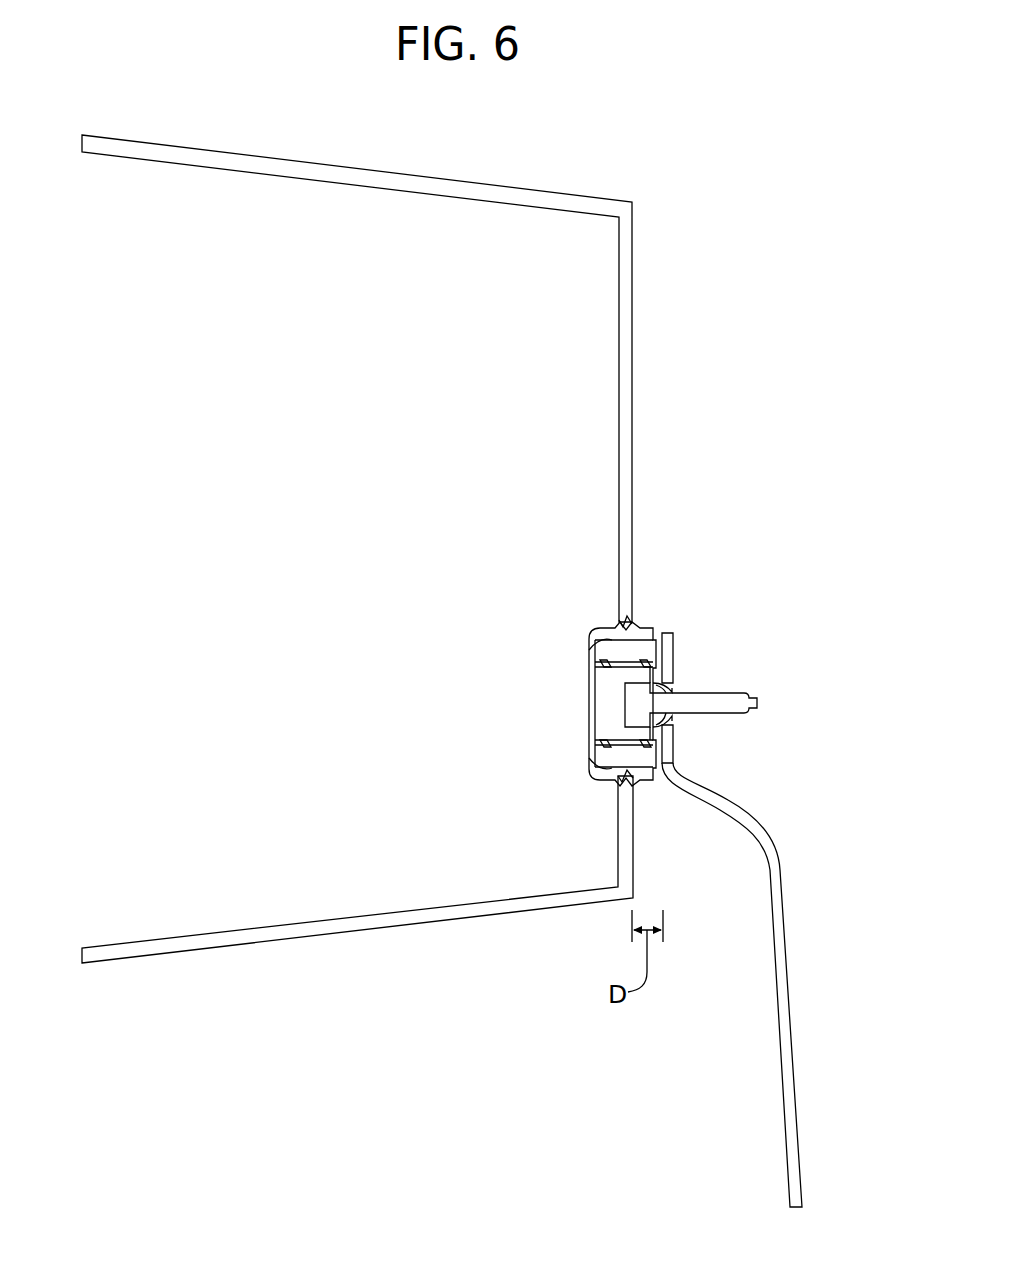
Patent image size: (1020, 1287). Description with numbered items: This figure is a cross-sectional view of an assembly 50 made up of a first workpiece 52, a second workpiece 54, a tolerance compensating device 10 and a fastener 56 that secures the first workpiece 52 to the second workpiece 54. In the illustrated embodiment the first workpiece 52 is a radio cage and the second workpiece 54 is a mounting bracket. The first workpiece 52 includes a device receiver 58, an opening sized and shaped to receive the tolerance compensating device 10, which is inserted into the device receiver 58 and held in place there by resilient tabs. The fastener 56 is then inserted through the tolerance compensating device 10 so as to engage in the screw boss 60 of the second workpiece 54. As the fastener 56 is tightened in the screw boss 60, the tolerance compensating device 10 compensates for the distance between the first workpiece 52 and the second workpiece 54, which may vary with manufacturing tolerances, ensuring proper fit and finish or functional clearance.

The tolerance compensating device 10 is at (545, 777).
The assembly 50 is at (722, 266).
The first workpiece 52 is at (619, 421).
The second workpiece 54 is at (785, 955).
The fastener 56 is at (625, 702).
The device receiver 58 is at (598, 652).
The screw boss 60 is at (681, 690).